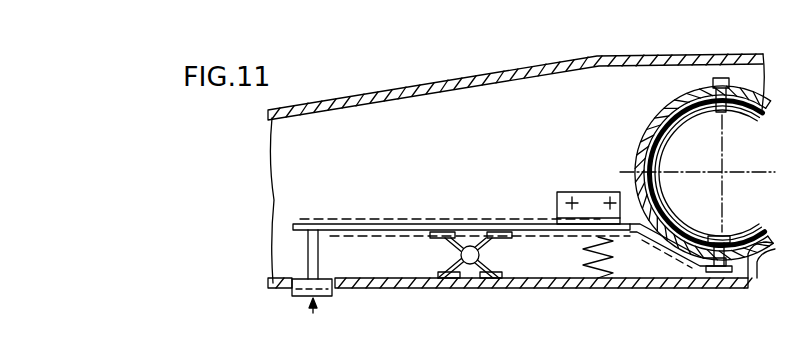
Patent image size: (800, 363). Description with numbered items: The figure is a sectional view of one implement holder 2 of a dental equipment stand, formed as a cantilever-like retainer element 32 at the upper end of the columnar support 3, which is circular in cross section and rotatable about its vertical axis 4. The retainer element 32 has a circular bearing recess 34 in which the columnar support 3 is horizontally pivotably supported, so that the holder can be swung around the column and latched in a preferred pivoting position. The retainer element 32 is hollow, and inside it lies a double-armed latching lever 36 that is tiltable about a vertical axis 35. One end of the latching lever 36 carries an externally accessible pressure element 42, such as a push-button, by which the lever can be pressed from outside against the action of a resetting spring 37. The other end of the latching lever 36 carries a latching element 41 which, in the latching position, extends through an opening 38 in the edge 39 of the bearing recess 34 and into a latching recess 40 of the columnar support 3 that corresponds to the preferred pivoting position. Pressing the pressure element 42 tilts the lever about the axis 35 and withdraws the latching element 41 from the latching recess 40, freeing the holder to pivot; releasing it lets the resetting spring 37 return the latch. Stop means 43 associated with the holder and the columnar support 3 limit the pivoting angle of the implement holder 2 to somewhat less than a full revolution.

The implement holder 2 is at (343, 103).
The cantilever-like retainer element 32 is at (431, 88).
The bearing recess 34 is at (667, 114).
The edge of the bearing recess 39 is at (651, 141).
The columnar support 3 is at (641, 163).
The vertical axis 4 is at (724, 172).
The stop means 43 is at (712, 92).
The latching recess 40 is at (714, 237).
The latching lever 36 is at (400, 231).
The pressure element 42 is at (332, 294).
The vertical axis of the latching lever 35 is at (470, 263).
The resetting spring 37 is at (618, 266).
The latching element 41 is at (700, 270).
The opening 38 is at (745, 274).